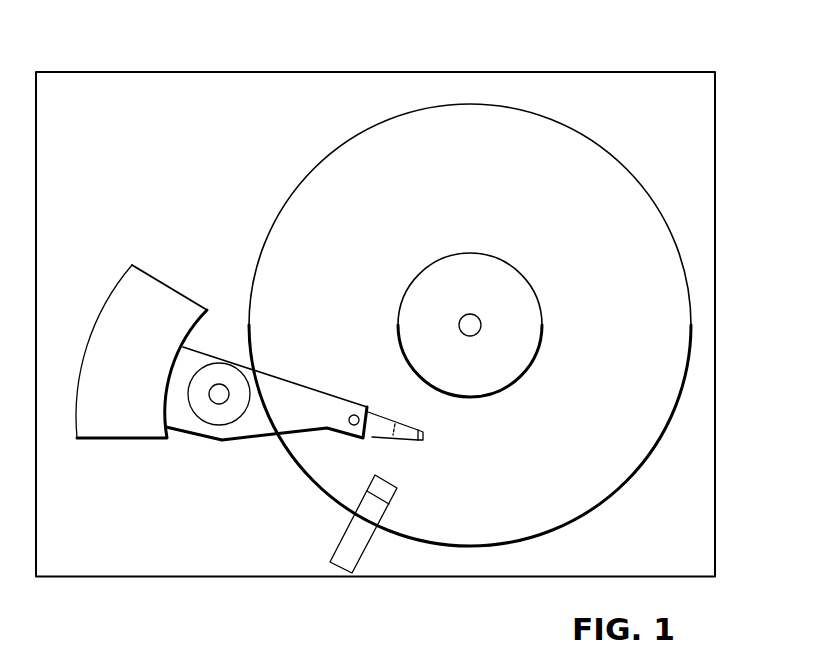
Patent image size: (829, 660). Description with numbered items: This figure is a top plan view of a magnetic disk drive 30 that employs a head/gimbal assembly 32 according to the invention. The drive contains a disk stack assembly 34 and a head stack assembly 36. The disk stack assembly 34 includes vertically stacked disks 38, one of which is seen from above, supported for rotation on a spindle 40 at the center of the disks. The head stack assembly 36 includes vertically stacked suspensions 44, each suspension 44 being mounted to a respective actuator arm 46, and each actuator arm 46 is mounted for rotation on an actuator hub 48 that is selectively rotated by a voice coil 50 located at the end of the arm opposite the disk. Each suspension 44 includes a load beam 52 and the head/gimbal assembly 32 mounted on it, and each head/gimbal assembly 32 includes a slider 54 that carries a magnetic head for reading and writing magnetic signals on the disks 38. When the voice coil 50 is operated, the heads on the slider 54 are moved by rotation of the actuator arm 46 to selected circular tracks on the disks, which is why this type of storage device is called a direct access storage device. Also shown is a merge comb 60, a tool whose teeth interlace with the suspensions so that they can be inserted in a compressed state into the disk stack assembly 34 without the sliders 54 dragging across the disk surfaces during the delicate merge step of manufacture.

The magnetic disk drive 30 is at (642, 50).
The head/gimbal assembly 32 is at (403, 447).
The disk stack assembly 34 is at (612, 150).
The head stack assembly 36 is at (327, 388).
The disk 38 is at (644, 353).
The spindle 40 is at (476, 314).
The suspension 44 is at (371, 445).
The actuator arm 46 is at (302, 395).
The actuator hub 48 is at (233, 410).
The voice coil 50 is at (170, 293).
The load beam 52 is at (387, 415).
The slider 54 is at (423, 437).
The merge comb 60 is at (363, 553).